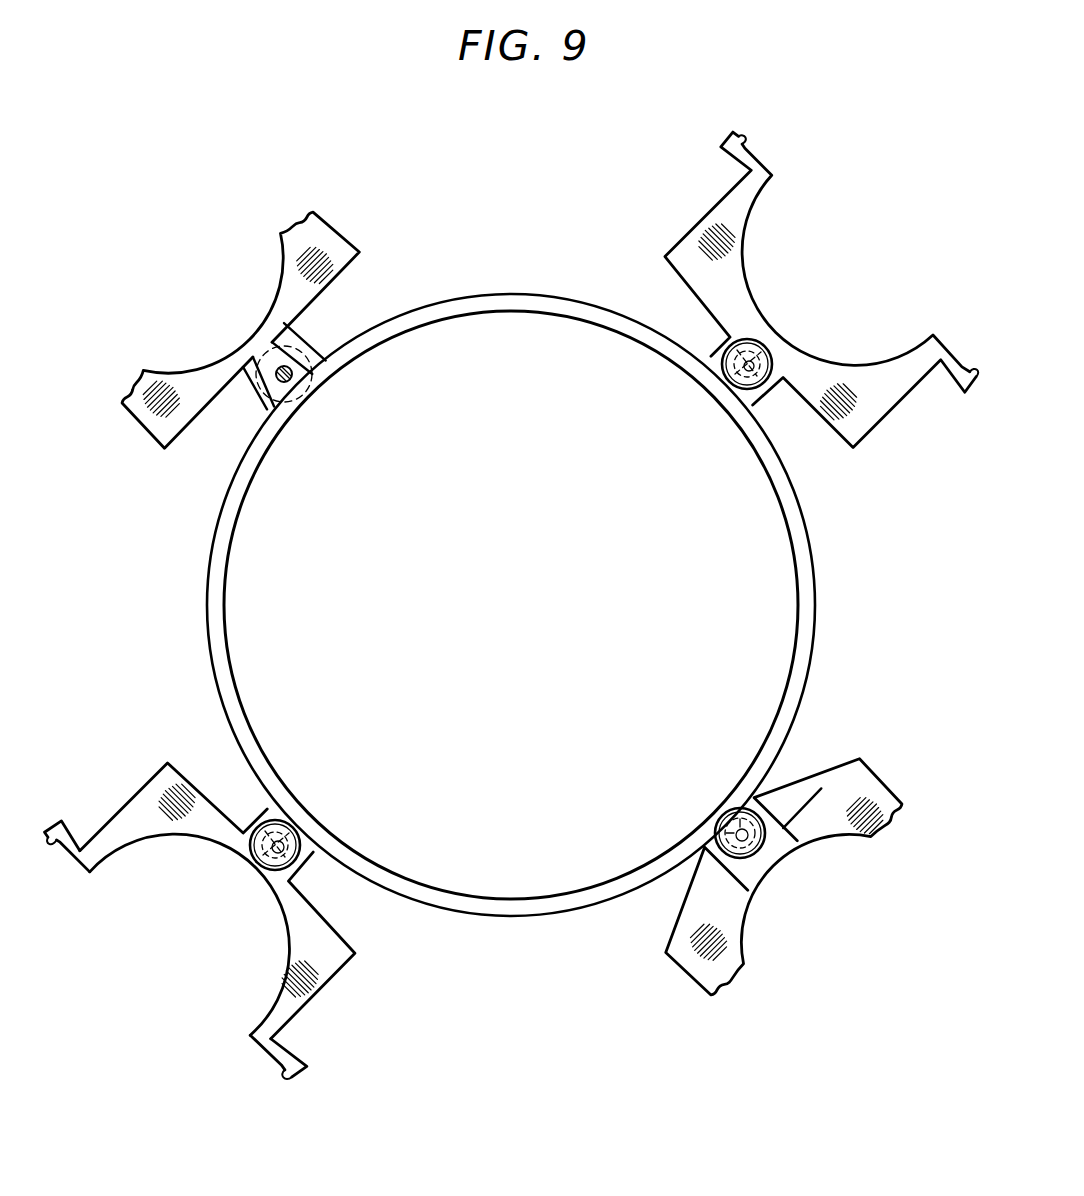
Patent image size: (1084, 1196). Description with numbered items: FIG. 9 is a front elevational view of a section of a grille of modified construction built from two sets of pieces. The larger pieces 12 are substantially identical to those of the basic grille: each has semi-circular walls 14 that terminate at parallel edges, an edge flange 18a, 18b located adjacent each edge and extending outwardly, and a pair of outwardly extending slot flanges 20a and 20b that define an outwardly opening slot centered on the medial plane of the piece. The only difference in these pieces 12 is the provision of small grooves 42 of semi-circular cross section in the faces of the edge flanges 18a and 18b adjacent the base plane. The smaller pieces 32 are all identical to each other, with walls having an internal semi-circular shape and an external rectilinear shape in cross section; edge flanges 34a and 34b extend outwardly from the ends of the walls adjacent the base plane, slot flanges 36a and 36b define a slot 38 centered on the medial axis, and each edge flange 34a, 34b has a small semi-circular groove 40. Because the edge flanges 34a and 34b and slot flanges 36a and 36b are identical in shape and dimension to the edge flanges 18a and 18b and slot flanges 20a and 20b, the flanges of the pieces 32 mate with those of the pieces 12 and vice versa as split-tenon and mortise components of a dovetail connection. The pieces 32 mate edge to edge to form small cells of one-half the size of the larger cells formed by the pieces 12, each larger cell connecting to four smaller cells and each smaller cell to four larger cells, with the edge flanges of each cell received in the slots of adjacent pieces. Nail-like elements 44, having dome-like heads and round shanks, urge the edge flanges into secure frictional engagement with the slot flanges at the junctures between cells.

The piece 12 is at (548, 316).
The walls 14 is at (236, 522).
The edge flange 18a is at (764, 384).
The edge flange 18b is at (732, 352).
The slot flange 20a is at (252, 372).
The slot flange 20b is at (288, 338).
The piece 32 is at (345, 232).
The edge flange 34a is at (55, 818).
The edge flange 34b is at (306, 1071).
The slot flange 36a is at (260, 818).
The slot flange 36b is at (310, 858).
The slot 38 is at (285, 830).
The groove 40 is at (58, 845).
The groove 42 is at (301, 379).
The nail-like element 44 is at (285, 404).